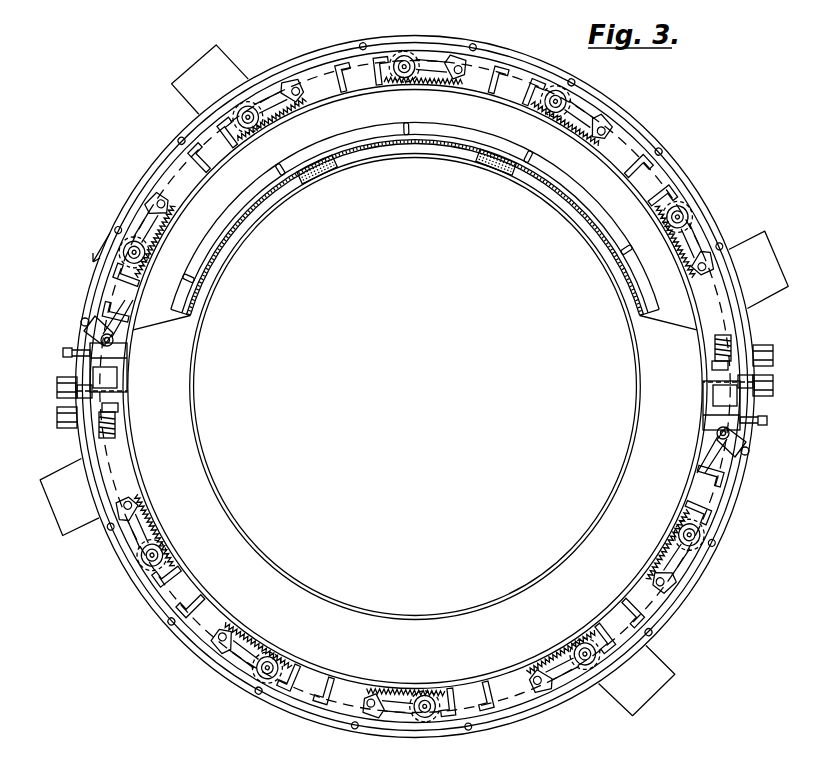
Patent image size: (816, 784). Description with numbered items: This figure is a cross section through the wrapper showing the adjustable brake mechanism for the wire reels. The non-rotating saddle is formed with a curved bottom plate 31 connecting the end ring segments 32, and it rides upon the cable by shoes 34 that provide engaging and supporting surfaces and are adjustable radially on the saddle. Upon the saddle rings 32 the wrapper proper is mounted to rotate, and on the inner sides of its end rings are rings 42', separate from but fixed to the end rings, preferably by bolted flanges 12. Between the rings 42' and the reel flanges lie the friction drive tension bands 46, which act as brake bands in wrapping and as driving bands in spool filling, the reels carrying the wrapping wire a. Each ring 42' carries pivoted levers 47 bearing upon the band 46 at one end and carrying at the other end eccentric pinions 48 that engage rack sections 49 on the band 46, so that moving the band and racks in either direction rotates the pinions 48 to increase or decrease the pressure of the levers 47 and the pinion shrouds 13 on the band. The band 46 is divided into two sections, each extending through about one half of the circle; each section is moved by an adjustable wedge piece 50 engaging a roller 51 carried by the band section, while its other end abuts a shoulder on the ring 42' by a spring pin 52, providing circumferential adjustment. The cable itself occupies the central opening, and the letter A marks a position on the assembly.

The bolted flanges 12 is at (623, 168).
The pinion shrouds 13 is at (247, 130).
The curved bottom plate 31 is at (345, 140).
The end ring segments 32 is at (157, 307).
The shoes 34 is at (486, 172).
The rings 42' is at (436, 416).
The friction drive tension bands 46 is at (216, 158).
The levers 47 is at (432, 68).
The eccentric pinions 48 is at (556, 92).
The rack sections 49 is at (292, 102).
The adjustable wedge piece 50 is at (122, 362).
The roller 51 is at (103, 338).
The spring pin 52 is at (118, 414).
The wrapping wire a is at (236, 237).
The point A is at (491, 185).